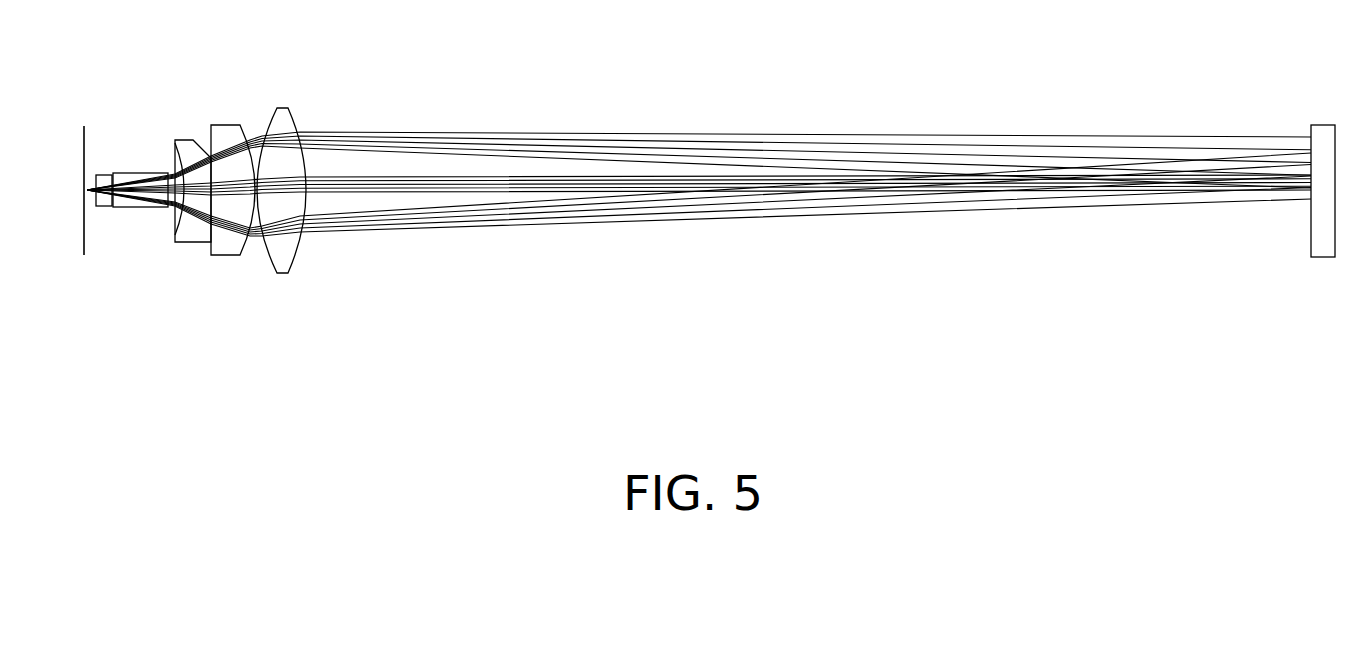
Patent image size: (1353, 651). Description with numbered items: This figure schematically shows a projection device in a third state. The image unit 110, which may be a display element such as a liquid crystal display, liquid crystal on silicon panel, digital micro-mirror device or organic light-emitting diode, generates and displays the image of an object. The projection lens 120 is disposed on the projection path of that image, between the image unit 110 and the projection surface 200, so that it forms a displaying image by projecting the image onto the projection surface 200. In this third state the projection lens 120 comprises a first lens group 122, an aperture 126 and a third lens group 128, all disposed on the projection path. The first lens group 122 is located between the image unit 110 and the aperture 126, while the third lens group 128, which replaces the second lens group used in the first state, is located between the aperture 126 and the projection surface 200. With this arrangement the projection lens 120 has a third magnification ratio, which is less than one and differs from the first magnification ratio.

The image unit 110 is at (1323, 135).
The projection lens 120 is at (199, 244).
The first lens group 122 is at (222, 210).
The aperture 126 is at (170, 167).
The third lens group 128 is at (165, 223).
The projection surface 200 is at (86, 139).